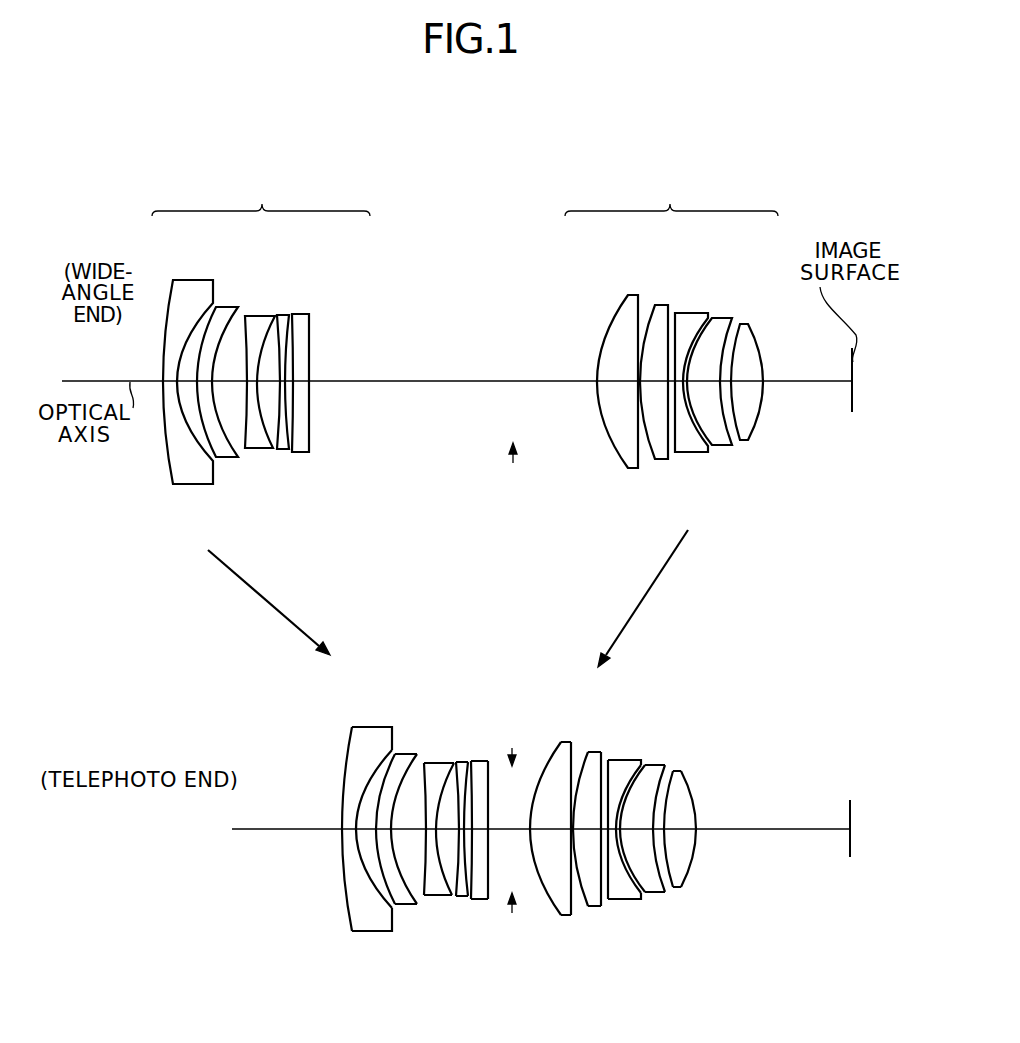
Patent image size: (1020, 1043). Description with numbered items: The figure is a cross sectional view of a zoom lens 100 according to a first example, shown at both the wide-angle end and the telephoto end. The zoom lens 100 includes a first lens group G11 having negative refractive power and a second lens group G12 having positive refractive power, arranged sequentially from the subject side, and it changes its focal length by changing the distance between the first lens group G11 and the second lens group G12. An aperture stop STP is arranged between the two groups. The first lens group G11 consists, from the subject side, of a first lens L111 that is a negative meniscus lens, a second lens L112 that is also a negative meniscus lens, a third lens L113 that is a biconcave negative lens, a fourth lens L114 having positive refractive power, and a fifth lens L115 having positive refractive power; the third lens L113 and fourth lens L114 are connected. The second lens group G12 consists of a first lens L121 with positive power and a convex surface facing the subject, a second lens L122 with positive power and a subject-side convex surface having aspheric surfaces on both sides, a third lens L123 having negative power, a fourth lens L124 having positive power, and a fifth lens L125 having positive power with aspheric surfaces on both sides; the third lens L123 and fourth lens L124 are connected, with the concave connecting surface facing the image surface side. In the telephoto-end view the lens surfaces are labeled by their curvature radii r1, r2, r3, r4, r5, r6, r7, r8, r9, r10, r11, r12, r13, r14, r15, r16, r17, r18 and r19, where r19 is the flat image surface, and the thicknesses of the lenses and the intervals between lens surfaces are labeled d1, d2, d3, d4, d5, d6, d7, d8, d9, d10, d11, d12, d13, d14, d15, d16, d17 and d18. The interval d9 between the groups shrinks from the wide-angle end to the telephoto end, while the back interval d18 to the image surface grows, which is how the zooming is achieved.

The zoom lens 100 is at (450, 180).
The first lens group G11 is at (255, 329).
The second lens group G12 is at (676, 321).
The aperture stop STP is at (512, 316).
The first lens L111 is at (193, 285).
The second lens L112 is at (230, 310).
The third lens L113 is at (257, 320).
The fourth lens L114 is at (285, 317).
The fifth lens L115 is at (307, 315).
The first lens L121 is at (620, 317).
The second lens L122 is at (657, 310).
The third lens L123 is at (683, 317).
The fourth lens L124 is at (717, 323).
The fifth lens L125 is at (743, 325).
The curvature radius r1 is at (348, 748).
The curvature radius r2 is at (378, 752).
The curvature radius r3 is at (390, 755).
The curvature radius r4 is at (407, 760).
The curvature radius r5 is at (423, 763).
The curvature radius r6 is at (442, 763).
The curvature radius r7 is at (458, 760).
The curvature radius r8 is at (477, 760).
The curvature radius r9 is at (490, 763).
The curvature radius r10 is at (555, 748).
The curvature radius r11 is at (572, 743).
The curvature radius r12 is at (582, 757).
The curvature radius r13 is at (598, 757).
The curvature radius r14 is at (610, 760).
The curvature radius r15 is at (635, 768).
The curvature radius r16 is at (657, 770).
The curvature radius r17 is at (680, 780).
The curvature radius r18 is at (693, 793).
The curvature radius r19 is at (850, 800).
The lens thickness d1 is at (350, 833).
The lens surface interval d2 is at (362, 833).
The lens thickness d3 is at (385, 833).
The lens surface interval d4 is at (412, 832).
The lens thickness d5 is at (433, 833).
The lens thickness d6 is at (440, 833).
The lens surface interval d7 is at (457, 833).
The lens thickness d8 is at (487, 838).
The lens surface interval d9 is at (498, 832).
The lens thickness d10 is at (553, 833).
The lens surface interval d11 is at (573, 833).
The lens thickness d12 is at (585, 833).
The lens surface interval d13 is at (603, 833).
The lens thickness d14 is at (615, 832).
The lens thickness d15 is at (640, 833).
The lens surface interval d16 is at (660, 833).
The lens thickness d17 is at (677, 832).
The lens surface interval d18 is at (787, 829).